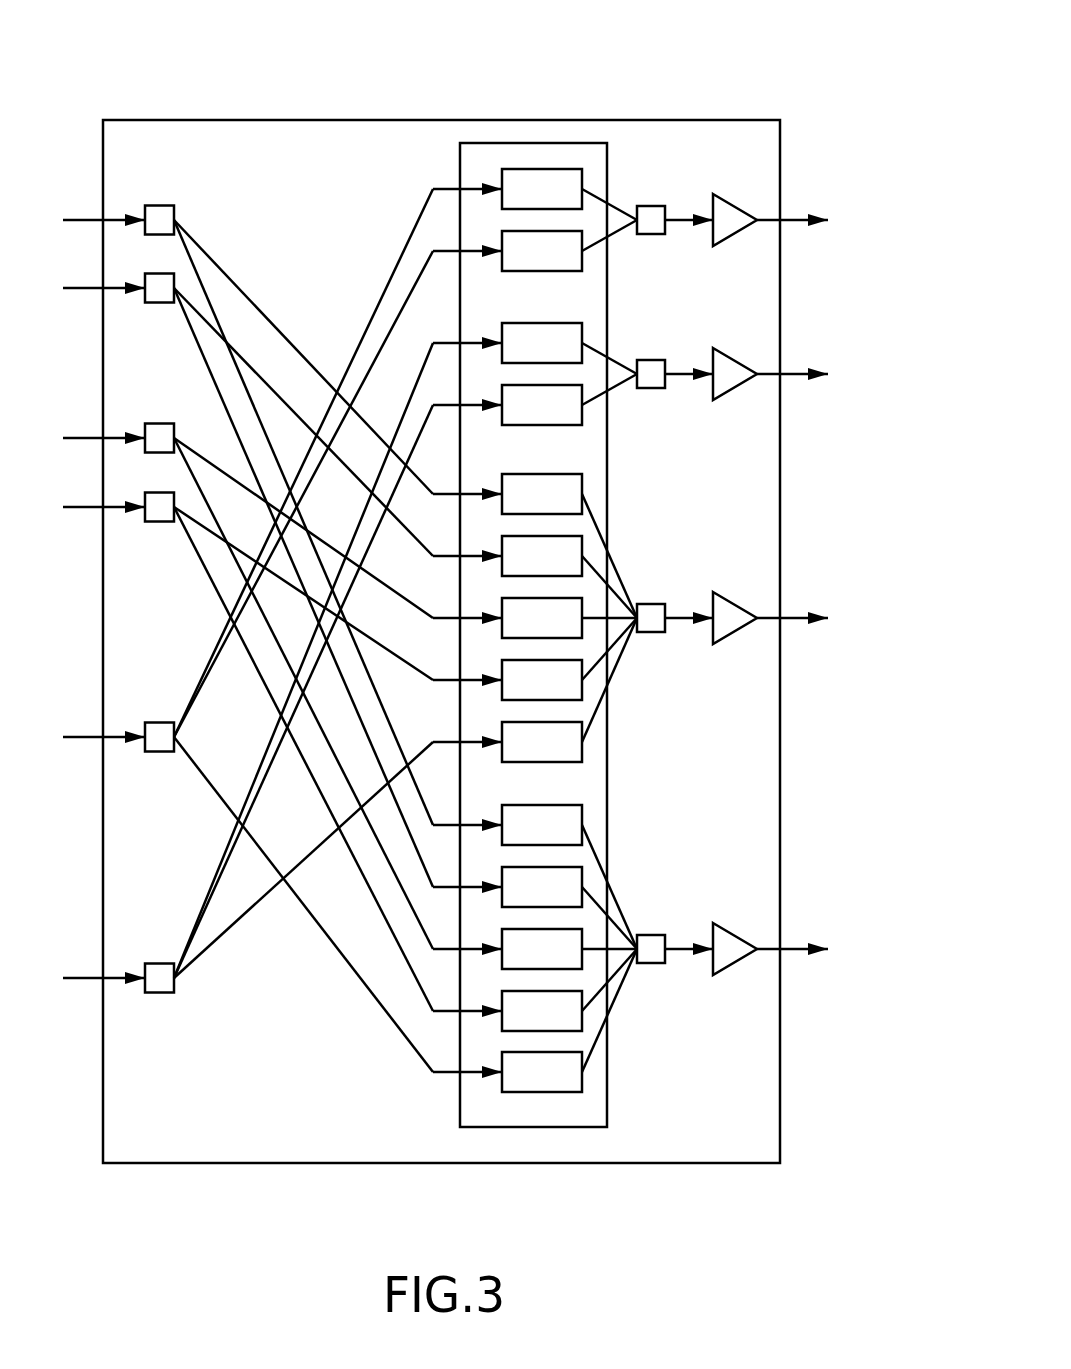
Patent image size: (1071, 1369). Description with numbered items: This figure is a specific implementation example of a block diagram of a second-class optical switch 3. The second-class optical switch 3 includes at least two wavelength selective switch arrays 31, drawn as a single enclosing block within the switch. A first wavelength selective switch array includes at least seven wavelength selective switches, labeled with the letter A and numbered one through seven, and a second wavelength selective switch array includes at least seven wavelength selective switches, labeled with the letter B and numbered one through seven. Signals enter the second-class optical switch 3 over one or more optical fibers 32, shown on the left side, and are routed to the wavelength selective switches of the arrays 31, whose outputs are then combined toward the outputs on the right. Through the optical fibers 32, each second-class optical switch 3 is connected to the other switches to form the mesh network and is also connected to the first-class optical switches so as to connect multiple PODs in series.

The second-class optical switch 3 is at (716, 50).
The wavelength selective switch array 31 is at (518, 152).
The optical fiber 32 is at (77, 207).